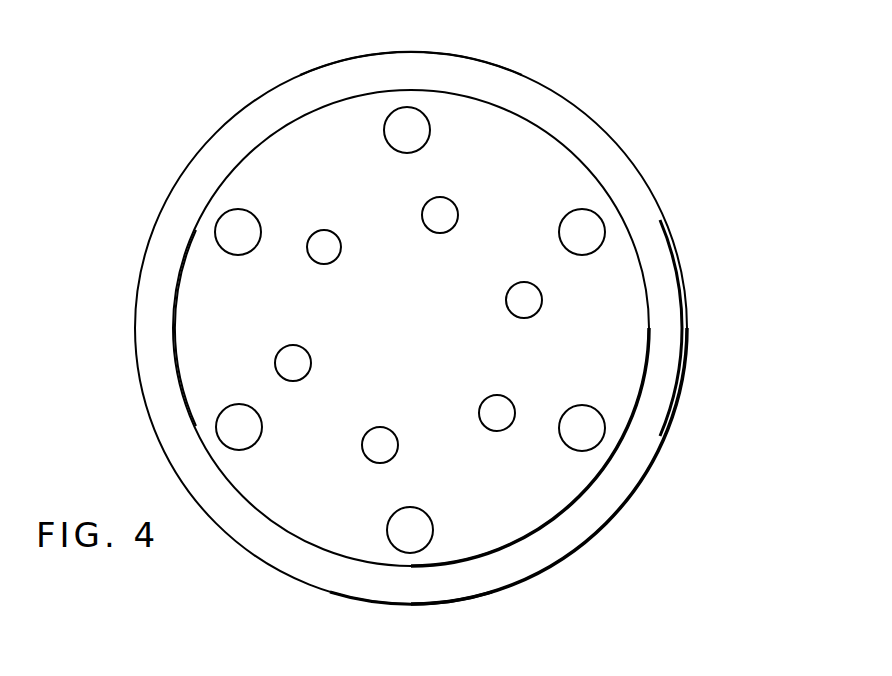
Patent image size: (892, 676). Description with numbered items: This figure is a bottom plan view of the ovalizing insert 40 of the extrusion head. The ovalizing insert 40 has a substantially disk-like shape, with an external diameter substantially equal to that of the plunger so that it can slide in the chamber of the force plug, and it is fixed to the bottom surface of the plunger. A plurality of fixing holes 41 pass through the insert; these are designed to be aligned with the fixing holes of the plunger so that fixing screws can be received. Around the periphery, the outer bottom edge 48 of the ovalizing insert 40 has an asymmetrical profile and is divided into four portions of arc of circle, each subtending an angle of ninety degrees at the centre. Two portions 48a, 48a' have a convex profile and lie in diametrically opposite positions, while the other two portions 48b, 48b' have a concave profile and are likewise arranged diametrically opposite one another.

The ovalizing insert 40 is at (120, 163).
The fixing holes 41 is at (585, 226).
The outer bottom edge 48 is at (642, 500).
The portion of outer bottom edge with convex profile 48a is at (411, 631).
The portion of outer bottom edge with convex profile 48a' is at (435, 37).
The portion of outer bottom edge with concave profile 48b is at (719, 328).
The portion of outer bottom edge with concave profile 48b' is at (111, 328).